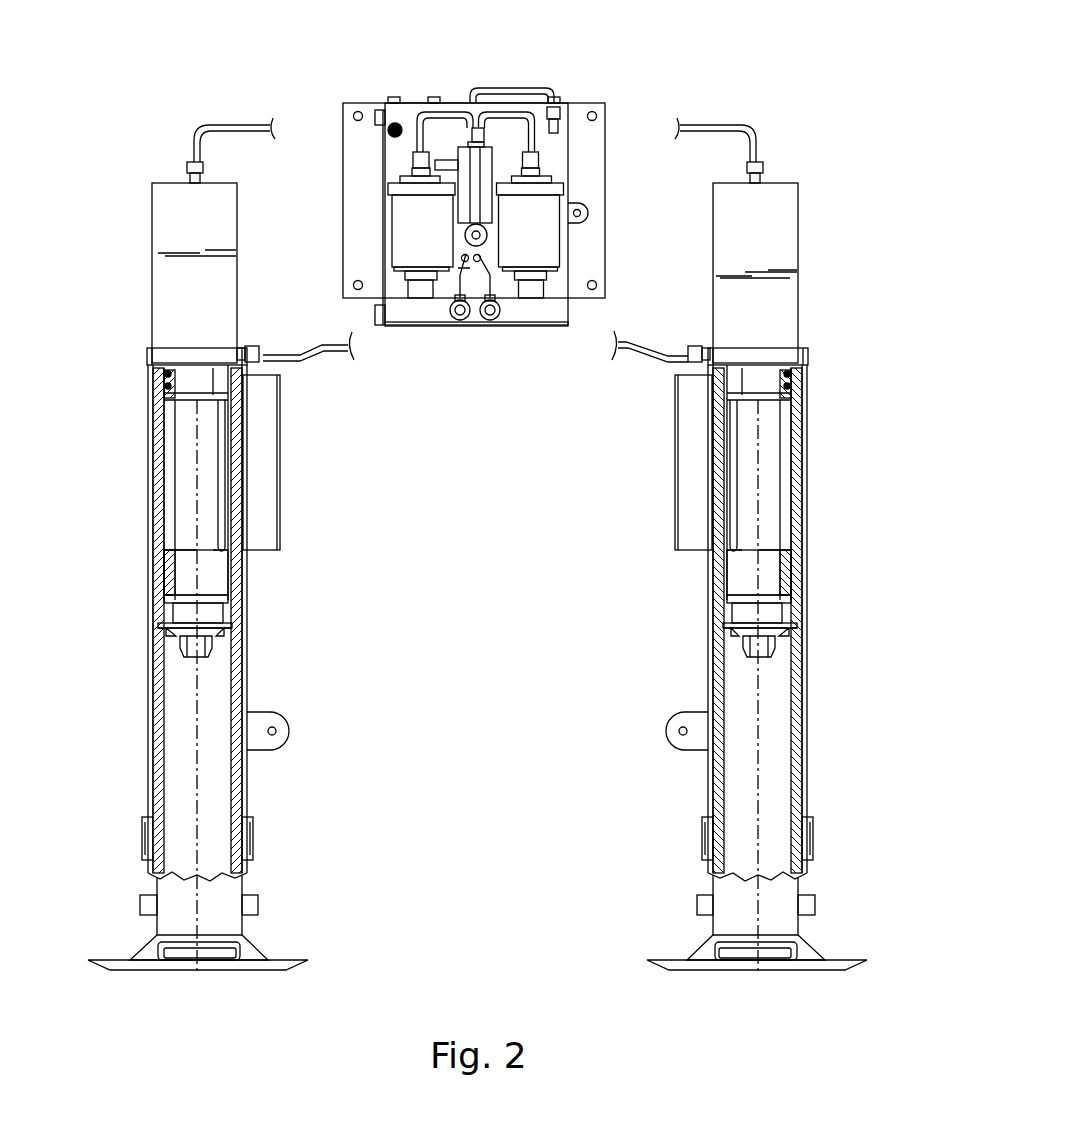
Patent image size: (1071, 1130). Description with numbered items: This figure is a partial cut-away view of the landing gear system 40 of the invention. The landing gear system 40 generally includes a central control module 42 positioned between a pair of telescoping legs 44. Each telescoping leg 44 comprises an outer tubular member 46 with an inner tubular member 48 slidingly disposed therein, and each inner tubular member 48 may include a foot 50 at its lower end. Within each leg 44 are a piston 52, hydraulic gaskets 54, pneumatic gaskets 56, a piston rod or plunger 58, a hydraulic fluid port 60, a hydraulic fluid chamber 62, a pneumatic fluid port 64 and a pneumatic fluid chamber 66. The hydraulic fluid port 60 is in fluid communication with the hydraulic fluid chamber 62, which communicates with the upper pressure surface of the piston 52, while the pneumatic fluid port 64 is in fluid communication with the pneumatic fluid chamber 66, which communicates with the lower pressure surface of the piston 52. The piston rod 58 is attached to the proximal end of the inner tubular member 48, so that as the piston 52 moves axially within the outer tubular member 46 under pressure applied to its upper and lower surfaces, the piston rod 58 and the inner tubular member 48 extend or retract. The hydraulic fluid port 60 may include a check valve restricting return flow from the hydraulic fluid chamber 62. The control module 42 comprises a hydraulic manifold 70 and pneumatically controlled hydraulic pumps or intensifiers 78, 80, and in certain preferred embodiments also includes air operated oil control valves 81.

The landing gear system 40 is at (647, 61).
The central control module 42 is at (358, 86).
The telescoping leg 44 is at (131, 439).
The outer tubular member 46 is at (155, 577).
The inner tubular member 48 is at (234, 787).
The foot 50 is at (290, 962).
The piston 52 is at (782, 441).
The hydraulic gaskets 54 is at (798, 378).
The pneumatic gaskets 56 is at (795, 388).
The piston rod 58 is at (740, 569).
The hydraulic fluid port 60 is at (186, 163).
The hydraulic fluid chamber 62 is at (165, 305).
The pneumatic fluid port 64 is at (258, 348).
The pneumatic fluid chamber 66 is at (770, 546).
The hydraulic manifold 70 is at (520, 313).
The pneumatically controlled hydraulic pump 78 is at (415, 237).
The pneumatically controlled hydraulic pump 80 is at (548, 237).
The air operated oil control valves 81 is at (490, 320).